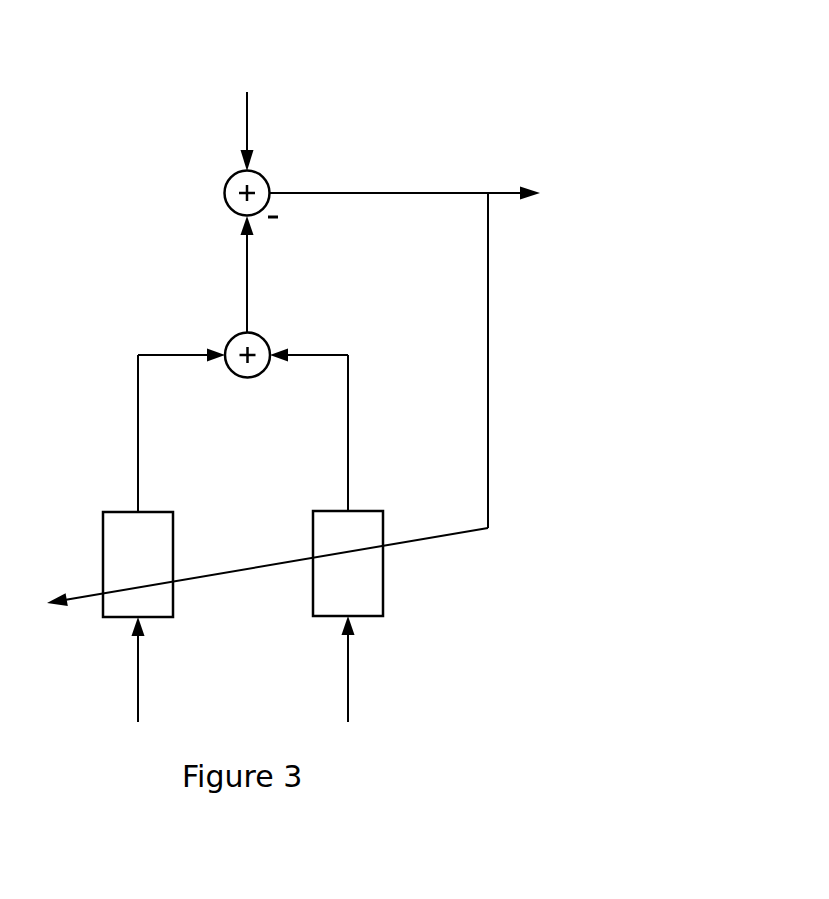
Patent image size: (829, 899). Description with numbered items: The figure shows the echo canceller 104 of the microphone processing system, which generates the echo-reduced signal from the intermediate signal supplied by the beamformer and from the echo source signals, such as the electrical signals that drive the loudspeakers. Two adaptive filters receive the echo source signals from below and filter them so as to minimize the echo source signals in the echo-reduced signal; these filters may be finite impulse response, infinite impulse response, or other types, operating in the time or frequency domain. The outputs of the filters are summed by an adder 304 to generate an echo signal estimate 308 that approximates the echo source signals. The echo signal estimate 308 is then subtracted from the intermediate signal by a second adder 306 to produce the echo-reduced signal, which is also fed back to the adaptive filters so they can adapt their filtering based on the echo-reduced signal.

The echo canceller 104 is at (443, 57).
The adder 304 is at (262, 335).
The adder 306 is at (263, 178).
The echo signal estimate 308 is at (247, 302).